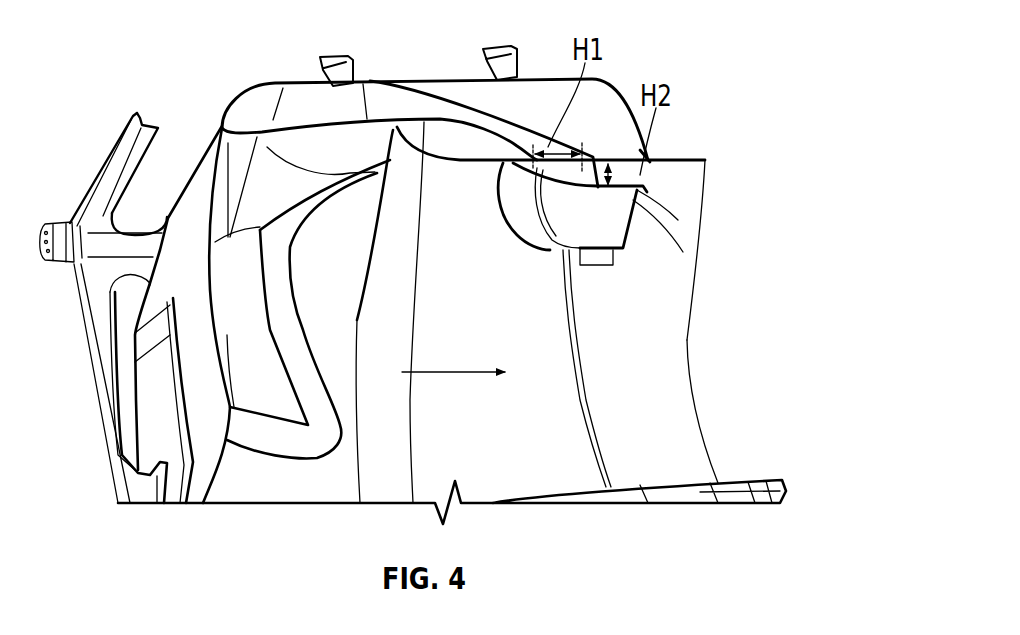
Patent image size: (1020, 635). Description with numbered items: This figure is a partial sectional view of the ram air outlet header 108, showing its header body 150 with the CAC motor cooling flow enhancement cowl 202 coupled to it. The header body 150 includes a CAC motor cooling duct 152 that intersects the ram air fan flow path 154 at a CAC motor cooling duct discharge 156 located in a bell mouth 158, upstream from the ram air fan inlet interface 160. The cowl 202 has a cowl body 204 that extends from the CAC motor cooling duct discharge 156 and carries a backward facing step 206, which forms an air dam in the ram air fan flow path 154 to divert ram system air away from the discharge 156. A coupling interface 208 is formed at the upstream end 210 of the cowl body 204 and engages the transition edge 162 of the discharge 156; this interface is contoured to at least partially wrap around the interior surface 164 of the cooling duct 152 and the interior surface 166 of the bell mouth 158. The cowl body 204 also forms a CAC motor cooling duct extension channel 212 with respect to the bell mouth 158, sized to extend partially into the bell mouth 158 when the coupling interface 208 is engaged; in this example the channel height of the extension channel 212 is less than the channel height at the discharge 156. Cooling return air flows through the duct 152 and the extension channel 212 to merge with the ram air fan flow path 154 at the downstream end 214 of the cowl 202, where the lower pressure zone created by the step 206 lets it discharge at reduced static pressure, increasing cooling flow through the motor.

The ram air outlet header 108 is at (195, 119).
The header body 150 is at (253, 127).
The CAC motor cooling duct 152 is at (393, 99).
The ram air fan flow path 154 is at (455, 375).
The CAC motor cooling duct discharge 156 is at (590, 158).
The bell mouth 158 is at (650, 355).
The ram air fan inlet interface 160 is at (700, 160).
The transition edge 162 is at (513, 157).
The interior surface of the CAC motor cooling duct 164 is at (483, 130).
The interior surface of the bell mouth 166 is at (420, 190).
The CAC motor cooling flow enhancement cowl 202 is at (675, 225).
The cowl body 204 is at (633, 217).
The backward facing step 206 is at (570, 227).
The coupling interface 208 is at (531, 222).
The upstream end 210 is at (557, 222).
The CAC motor cooling duct extension channel 212 is at (645, 157).
The downstream end 214 is at (623, 254).